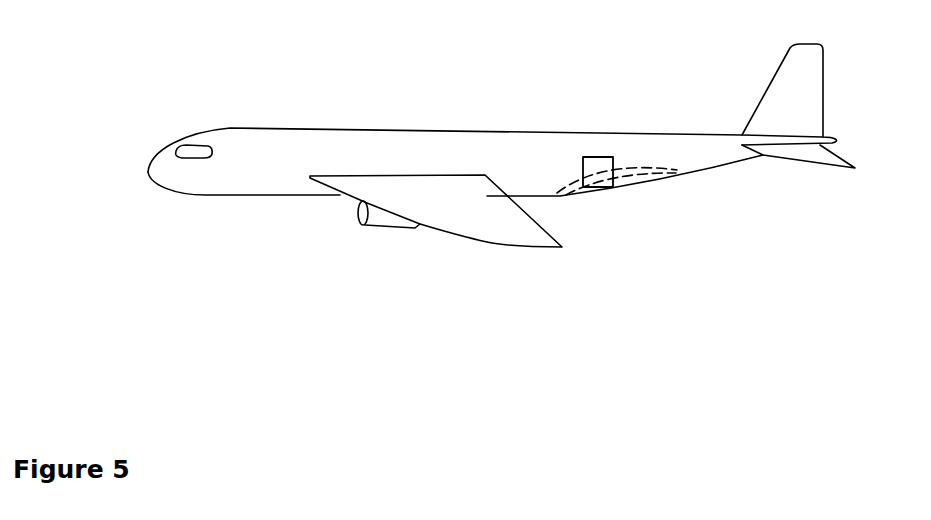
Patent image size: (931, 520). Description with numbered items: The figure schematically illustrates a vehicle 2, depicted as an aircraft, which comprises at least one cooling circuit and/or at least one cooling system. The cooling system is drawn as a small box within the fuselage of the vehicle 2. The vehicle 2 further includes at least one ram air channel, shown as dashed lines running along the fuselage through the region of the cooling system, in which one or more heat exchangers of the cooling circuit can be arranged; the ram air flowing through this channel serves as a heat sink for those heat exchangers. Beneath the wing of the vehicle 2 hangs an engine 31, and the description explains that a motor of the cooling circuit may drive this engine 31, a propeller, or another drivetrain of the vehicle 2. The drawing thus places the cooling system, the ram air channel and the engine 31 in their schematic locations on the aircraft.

The vehicle 2 is at (411, 130).
The engine 31 is at (380, 215).